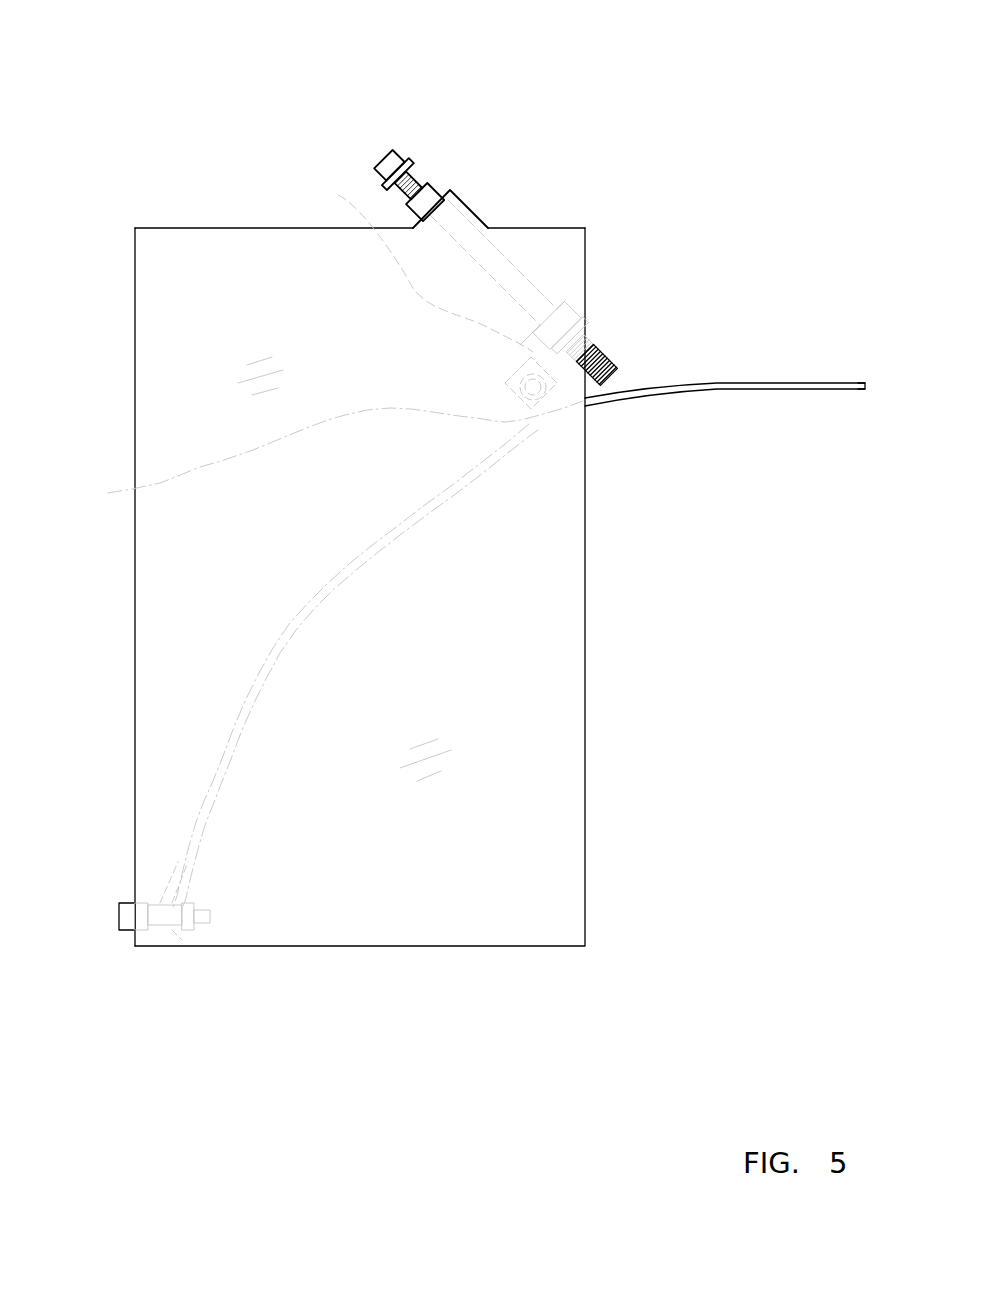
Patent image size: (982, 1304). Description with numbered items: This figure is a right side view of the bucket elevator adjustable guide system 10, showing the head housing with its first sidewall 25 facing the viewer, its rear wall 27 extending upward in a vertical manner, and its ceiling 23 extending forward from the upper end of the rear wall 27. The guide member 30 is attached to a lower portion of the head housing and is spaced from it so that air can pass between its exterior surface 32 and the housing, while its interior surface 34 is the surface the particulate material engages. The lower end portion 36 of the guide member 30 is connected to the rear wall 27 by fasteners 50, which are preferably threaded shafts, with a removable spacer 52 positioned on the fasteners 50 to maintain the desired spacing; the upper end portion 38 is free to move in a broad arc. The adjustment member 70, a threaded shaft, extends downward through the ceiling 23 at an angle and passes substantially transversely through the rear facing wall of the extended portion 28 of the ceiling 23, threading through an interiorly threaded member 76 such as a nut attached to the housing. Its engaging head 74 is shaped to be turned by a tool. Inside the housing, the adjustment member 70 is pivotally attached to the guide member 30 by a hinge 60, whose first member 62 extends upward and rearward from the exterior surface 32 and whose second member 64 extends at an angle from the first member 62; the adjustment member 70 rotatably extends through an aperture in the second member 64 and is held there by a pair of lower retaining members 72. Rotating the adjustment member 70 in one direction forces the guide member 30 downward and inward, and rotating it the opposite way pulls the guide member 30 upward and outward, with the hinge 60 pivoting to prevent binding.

The bucket elevator adjustable guide system 10 is at (701, 125).
The ceiling 23 is at (247, 228).
The first sidewall 25 is at (478, 573).
The rear wall 27 is at (135, 375).
The extended portion 28 is at (474, 212).
The guide member 30 is at (721, 364).
The exterior surface 32 is at (764, 383).
The interior surface 34 is at (736, 390).
The lower end portion 36 is at (177, 935).
The upper end portion 38 is at (867, 390).
The fasteners 50 is at (119, 916).
The spacer 52 is at (158, 886).
The hinge 60 is at (585, 403).
The first member 62 is at (322, 456).
The second member 64 is at (412, 266).
The adjustment member 70 is at (517, 282).
The lower retaining members 72 is at (566, 305).
The engaging head 74 is at (393, 150).
The interiorly threaded member 76 is at (438, 180).